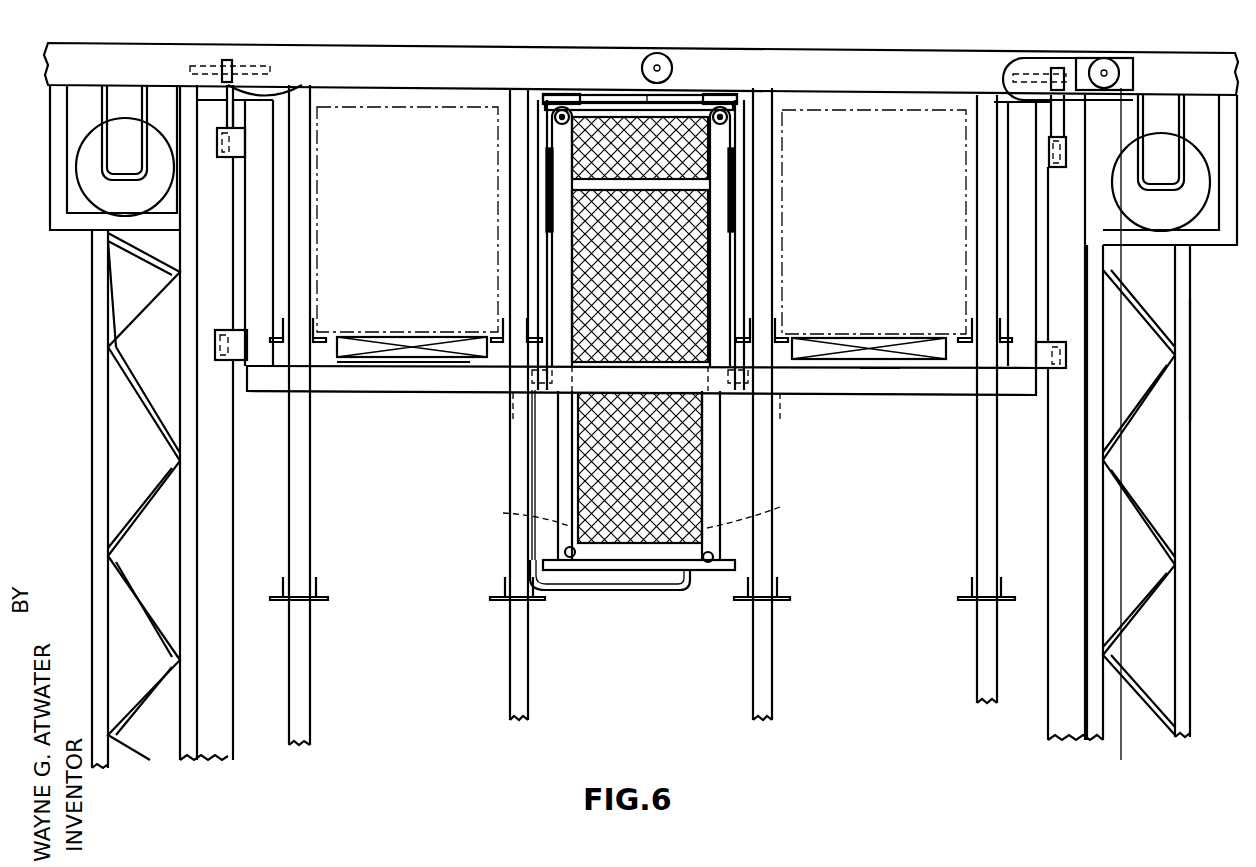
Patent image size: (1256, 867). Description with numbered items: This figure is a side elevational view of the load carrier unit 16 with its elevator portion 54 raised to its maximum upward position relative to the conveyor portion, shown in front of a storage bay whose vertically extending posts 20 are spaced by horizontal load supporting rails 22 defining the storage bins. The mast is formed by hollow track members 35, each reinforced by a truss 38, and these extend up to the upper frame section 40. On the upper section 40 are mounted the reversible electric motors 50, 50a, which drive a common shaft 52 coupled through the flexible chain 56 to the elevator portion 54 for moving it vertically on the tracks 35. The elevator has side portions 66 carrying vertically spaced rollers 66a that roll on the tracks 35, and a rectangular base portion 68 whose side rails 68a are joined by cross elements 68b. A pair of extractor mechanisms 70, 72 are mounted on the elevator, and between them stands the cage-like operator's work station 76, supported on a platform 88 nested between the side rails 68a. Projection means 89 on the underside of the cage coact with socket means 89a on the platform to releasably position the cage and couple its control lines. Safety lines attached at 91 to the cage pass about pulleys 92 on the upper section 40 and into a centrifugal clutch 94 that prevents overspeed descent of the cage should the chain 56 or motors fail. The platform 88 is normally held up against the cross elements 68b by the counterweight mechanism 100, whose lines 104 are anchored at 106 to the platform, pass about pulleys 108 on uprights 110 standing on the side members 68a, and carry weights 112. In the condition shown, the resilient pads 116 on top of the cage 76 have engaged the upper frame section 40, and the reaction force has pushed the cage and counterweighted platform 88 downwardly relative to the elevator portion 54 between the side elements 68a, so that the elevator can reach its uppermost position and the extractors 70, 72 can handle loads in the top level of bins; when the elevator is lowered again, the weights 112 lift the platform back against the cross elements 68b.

The load carrier unit 16 is at (1193, 346).
The vertically extending posts 20 is at (311, 694).
The load supporting rails 22 is at (313, 326).
The track members 35 is at (226, 507).
The truss 38 is at (100, 448).
The upper section of the conveyor portion 40 is at (957, 70).
The reversible electric motor 50 is at (90, 177).
The reversible electric motor 50a is at (1190, 205).
The common shaft 52 is at (262, 70).
The elevator portion 54 is at (880, 386).
The flexible chain 56 is at (280, 93).
The side portions of the elevator 66 is at (258, 185).
The rollers 66a is at (245, 143).
The base portion 68 is at (353, 388).
The side rails 68a is at (458, 396).
The cross elements 68b is at (784, 408).
The extractor mechanism 70 is at (426, 372).
The extractor mechanism 72 is at (912, 364).
The operator's work station 76 is at (742, 250).
The platform 88 is at (705, 572).
The projection means 89 is at (503, 513).
The socket means 89a is at (618, 578).
The safety line attachment 91 is at (635, 97).
The pulleys 92 is at (660, 54).
The centrifugal clutch 94 is at (1128, 62).
The counterweight mechanism 100 is at (535, 215).
The lines 104 is at (560, 468).
The anchor 106 is at (565, 553).
The pulleys 108 is at (549, 104).
The uprights 110 is at (562, 268).
The weights 112 is at (546, 152).
The resilient pads 116 is at (565, 93).